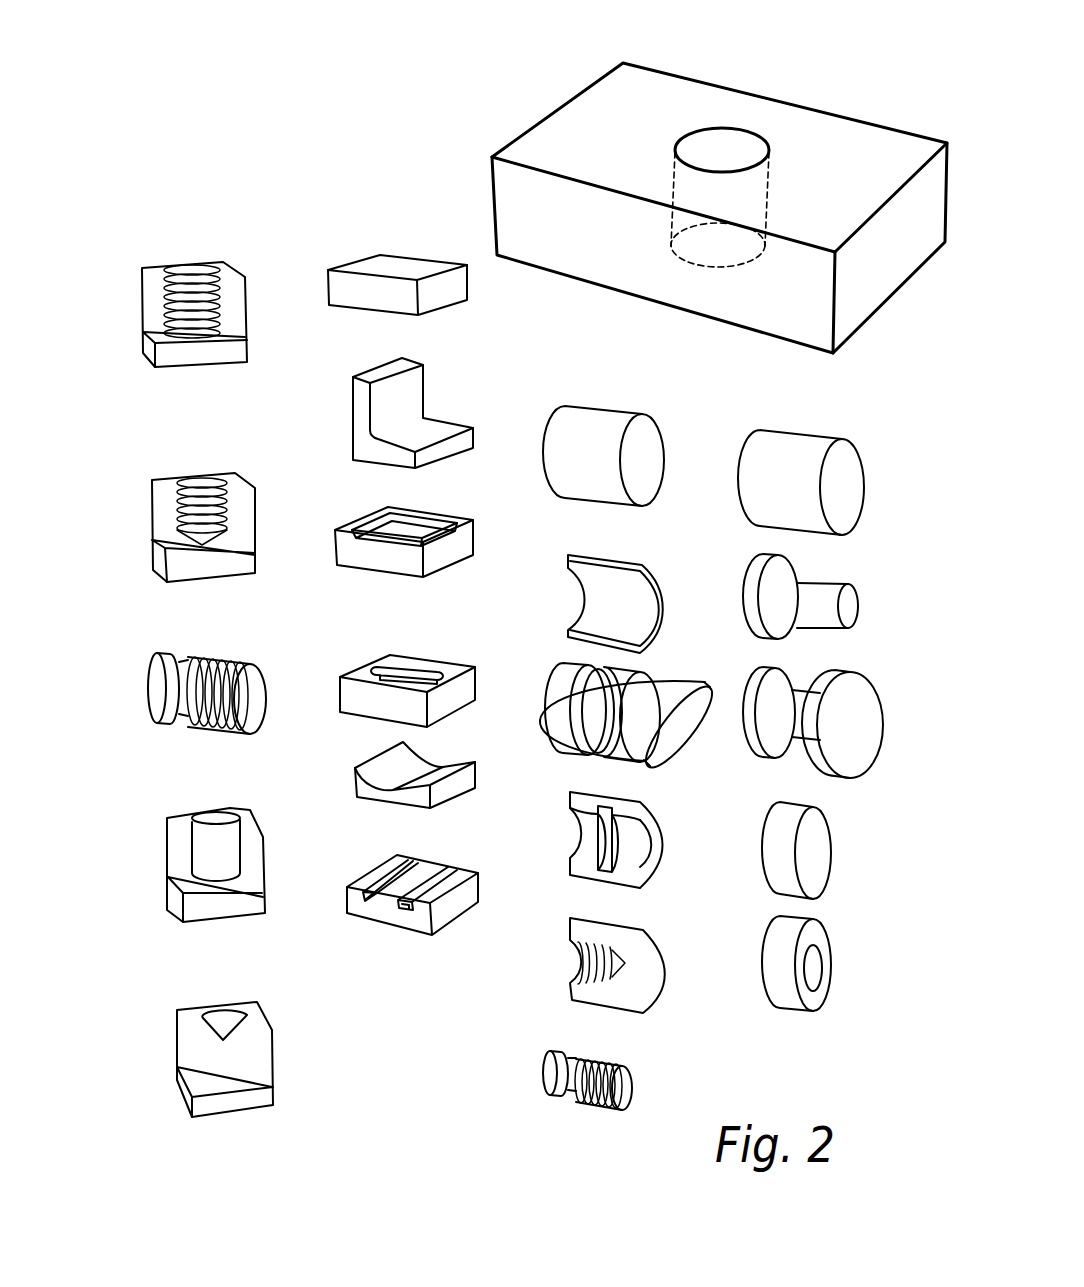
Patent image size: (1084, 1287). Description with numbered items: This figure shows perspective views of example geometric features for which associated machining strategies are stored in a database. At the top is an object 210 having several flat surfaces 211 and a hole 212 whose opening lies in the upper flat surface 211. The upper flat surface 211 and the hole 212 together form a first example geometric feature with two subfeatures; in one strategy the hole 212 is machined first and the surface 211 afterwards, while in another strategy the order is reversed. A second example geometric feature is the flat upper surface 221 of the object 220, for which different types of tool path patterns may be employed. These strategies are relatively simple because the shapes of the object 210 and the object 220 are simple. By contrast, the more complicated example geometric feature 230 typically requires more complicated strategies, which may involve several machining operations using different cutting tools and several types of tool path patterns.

The object 210 is at (577, 46).
The flat surface 211 is at (863, 146).
The hole 212 is at (723, 148).
The object 220 is at (433, 249).
The flat upper surface 221 is at (362, 267).
The geometric feature 230 is at (155, 1056).